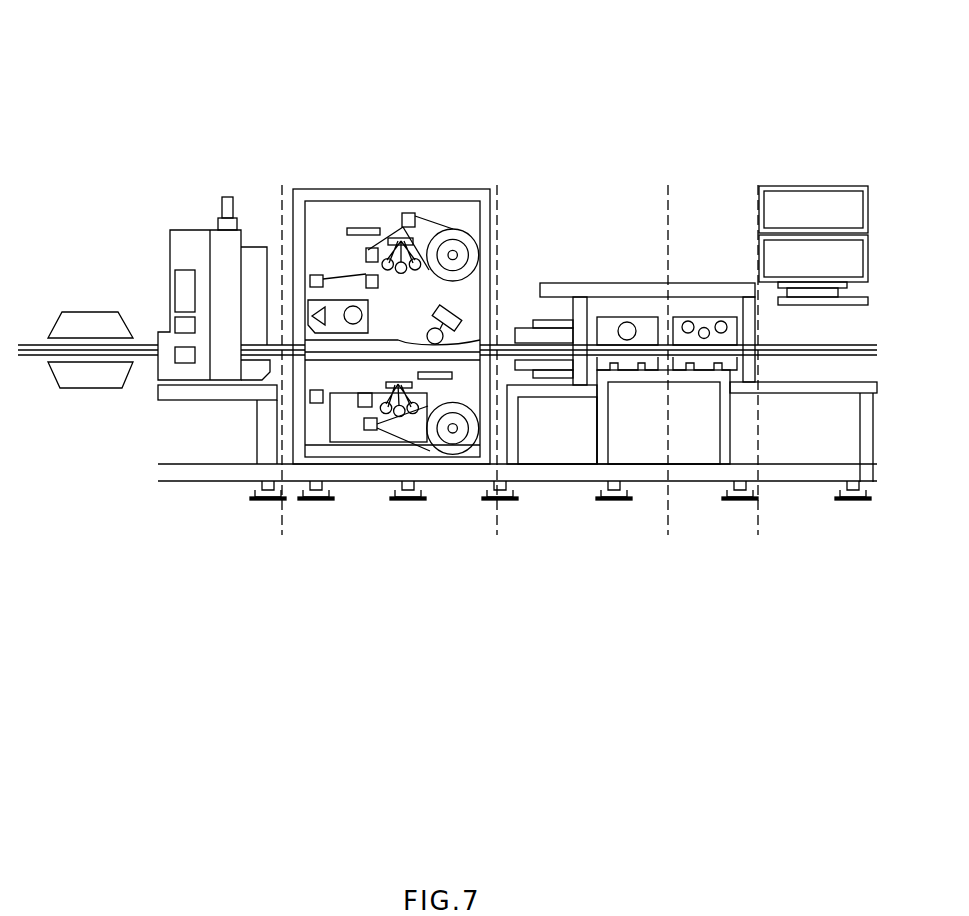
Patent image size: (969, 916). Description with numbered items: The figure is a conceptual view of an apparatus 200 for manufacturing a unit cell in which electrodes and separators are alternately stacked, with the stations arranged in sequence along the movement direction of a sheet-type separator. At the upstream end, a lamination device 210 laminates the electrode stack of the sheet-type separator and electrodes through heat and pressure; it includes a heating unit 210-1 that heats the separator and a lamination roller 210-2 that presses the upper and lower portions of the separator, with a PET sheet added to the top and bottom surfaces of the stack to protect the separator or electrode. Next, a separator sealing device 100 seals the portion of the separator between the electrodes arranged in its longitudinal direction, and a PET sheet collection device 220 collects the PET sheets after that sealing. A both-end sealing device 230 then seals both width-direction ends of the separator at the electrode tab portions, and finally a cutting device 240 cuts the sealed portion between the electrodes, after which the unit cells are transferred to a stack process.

The apparatus for manufacturing a unit cell 200 is at (180, 37).
The separator sealing device 100 is at (257, 258).
The lamination device 210 is at (115, 221).
The heating unit 210-1 is at (85, 380).
The lamination roller 210-2 is at (187, 360).
The PET sheet collection device 220 is at (393, 164).
The both-end sealing device 230 is at (596, 237).
The cutting device 240 is at (714, 237).